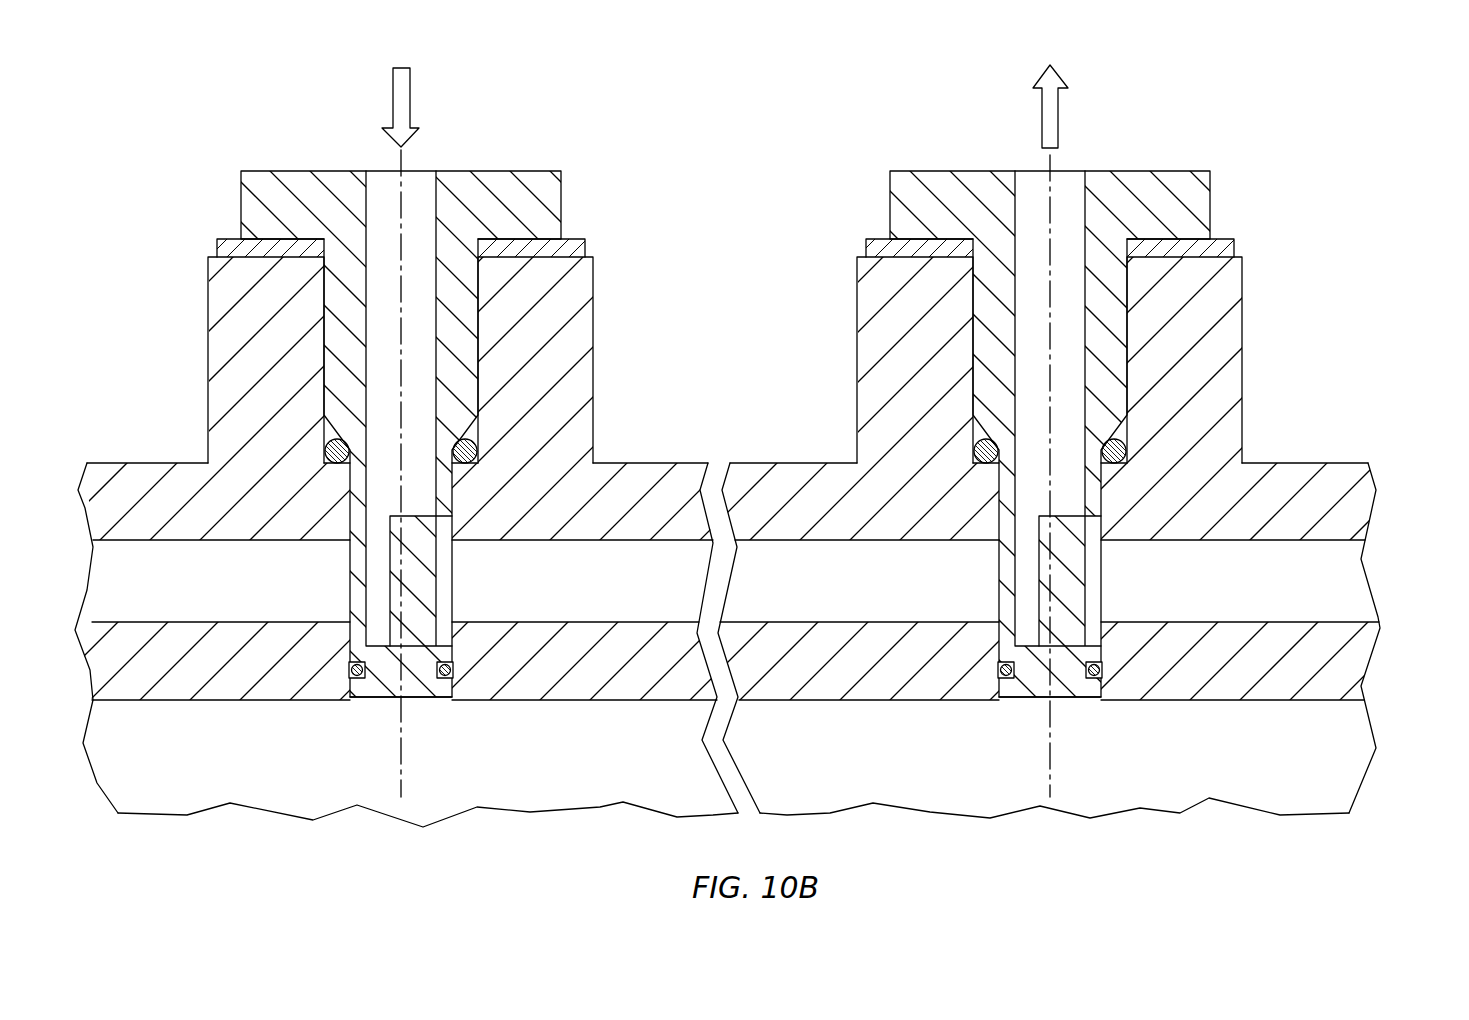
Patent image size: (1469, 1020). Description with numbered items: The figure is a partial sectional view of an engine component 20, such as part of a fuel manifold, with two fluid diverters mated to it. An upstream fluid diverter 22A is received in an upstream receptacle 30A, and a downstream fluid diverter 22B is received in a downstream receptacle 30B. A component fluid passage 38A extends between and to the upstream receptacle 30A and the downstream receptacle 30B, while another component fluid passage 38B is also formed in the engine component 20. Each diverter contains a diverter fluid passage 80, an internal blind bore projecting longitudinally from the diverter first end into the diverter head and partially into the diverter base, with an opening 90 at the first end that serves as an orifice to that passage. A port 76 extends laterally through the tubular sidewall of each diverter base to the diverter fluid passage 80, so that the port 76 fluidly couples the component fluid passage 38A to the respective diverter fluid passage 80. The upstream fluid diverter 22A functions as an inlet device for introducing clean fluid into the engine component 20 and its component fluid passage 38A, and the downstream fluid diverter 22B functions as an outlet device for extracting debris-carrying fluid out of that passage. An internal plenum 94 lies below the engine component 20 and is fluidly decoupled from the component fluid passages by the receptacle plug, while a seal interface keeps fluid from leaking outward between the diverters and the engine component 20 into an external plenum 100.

The external plenum 100 is at (224, 79).
The engine component 20 is at (1311, 414).
The upstream fluid diverter 22A is at (214, 182).
The downstream fluid diverter 22B is at (1237, 182).
The opening 90 is at (382, 170).
The diverter fluid passage 80 is at (425, 190).
The port 76 is at (445, 595).
The component fluid passage 38A is at (611, 609).
The other component fluid passage 38B is at (1348, 583).
The upstream receptacle 30A is at (370, 719).
The downstream receptacle 30B is at (1078, 719).
The internal plenum 94 is at (210, 775).